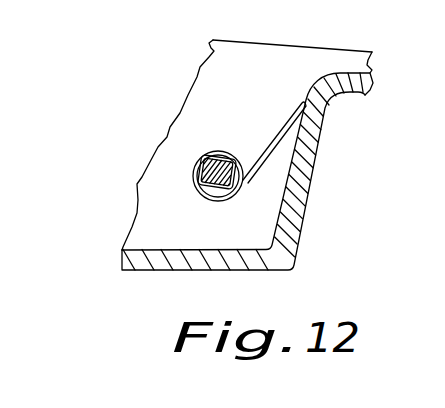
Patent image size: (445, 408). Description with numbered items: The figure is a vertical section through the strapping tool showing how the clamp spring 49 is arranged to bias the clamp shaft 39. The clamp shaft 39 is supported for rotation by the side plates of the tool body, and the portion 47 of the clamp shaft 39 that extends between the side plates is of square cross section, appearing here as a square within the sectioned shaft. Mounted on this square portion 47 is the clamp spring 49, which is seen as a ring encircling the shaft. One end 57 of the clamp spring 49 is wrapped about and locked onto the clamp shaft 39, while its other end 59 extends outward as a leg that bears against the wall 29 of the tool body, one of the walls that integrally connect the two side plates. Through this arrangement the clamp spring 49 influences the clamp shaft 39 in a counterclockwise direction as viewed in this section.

The wall 29 is at (306, 186).
The clamp shaft 39 is at (216, 191).
The portion of the clamp shaft 47 is at (229, 157).
The clamp spring 49 is at (210, 151).
The end of the clamp spring 57 is at (199, 173).
The other end of the clamp spring 59 is at (271, 151).